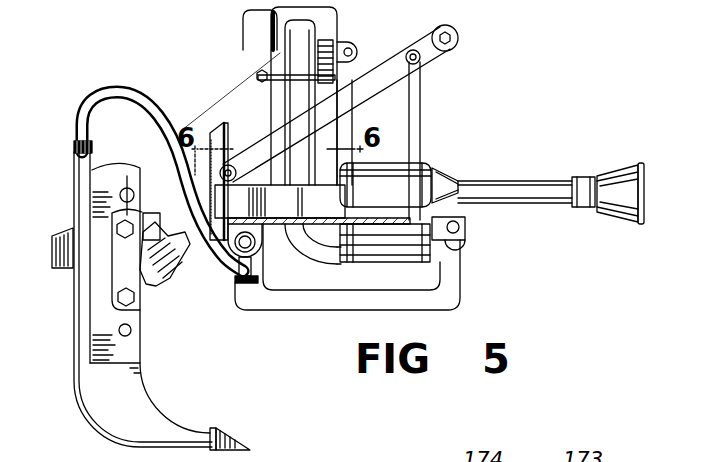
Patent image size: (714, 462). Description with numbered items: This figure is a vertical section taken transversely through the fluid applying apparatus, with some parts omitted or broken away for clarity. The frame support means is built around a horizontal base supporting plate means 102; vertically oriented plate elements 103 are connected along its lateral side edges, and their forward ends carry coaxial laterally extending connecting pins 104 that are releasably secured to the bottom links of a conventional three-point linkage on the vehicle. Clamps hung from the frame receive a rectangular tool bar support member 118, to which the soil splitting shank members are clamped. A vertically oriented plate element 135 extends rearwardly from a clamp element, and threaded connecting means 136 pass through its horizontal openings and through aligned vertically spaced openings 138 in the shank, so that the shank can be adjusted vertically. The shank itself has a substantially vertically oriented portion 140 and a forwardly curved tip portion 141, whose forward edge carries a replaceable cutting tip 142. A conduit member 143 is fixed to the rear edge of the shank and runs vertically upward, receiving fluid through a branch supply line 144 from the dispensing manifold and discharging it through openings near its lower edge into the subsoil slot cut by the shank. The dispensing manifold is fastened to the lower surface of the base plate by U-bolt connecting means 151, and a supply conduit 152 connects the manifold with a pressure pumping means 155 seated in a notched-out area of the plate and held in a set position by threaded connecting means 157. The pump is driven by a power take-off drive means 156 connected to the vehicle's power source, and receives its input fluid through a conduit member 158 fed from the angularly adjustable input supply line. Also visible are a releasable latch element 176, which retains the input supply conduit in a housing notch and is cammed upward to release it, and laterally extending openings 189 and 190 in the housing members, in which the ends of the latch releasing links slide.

The base supporting plate means 102 is at (366, 212).
The plate elements 103 is at (462, 224).
The connecting pins 104 is at (462, 241).
The tool bar support member 118 is at (170, 263).
The vertically oriented plate element 135 is at (130, 190).
The threaded connecting means 136 is at (118, 300).
The vertically spaced openings 138 is at (131, 328).
The vertically oriented portion 140 is at (135, 350).
The forwardly curved tip portion 141 is at (183, 437).
The replaceable cutting tip 142 is at (230, 443).
The conduit member 143 is at (75, 199).
The branch supply line 144 is at (93, 108).
The U-bolt connecting means 151 is at (265, 268).
The supply conduit 152 is at (328, 303).
The pressure pumping means 155 is at (383, 245).
The power take-off drive means 156 is at (510, 185).
The threaded connecting means 157 is at (430, 182).
The conduit member 158 is at (322, 250).
The releasable latch element 176 is at (243, 22).
The laterally extending opening 189 is at (331, 45).
The laterally extending opening 190 is at (352, 50).